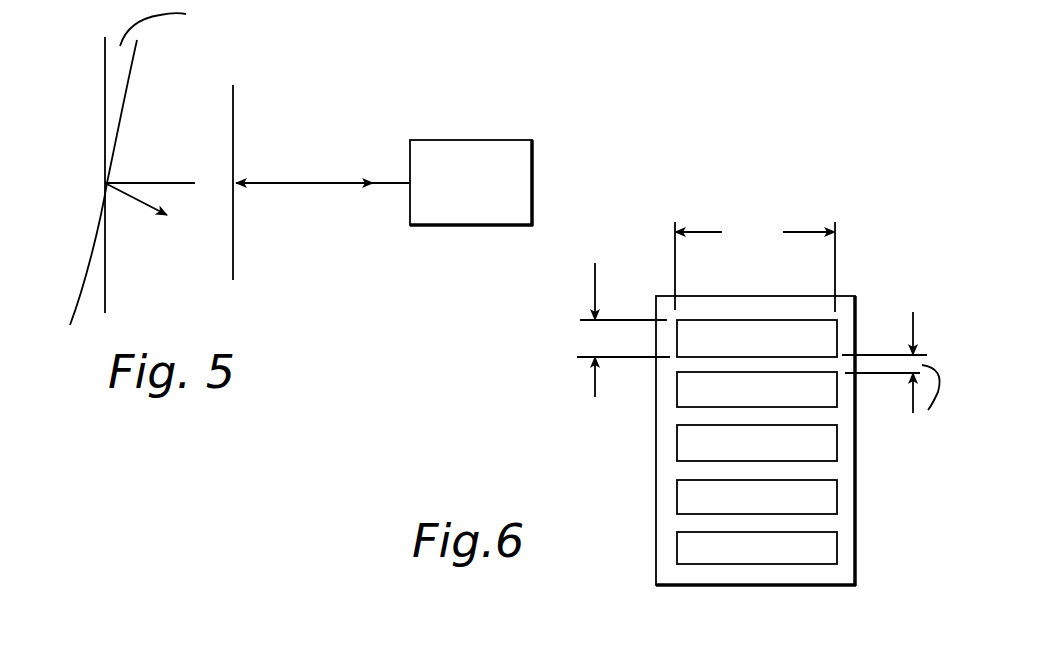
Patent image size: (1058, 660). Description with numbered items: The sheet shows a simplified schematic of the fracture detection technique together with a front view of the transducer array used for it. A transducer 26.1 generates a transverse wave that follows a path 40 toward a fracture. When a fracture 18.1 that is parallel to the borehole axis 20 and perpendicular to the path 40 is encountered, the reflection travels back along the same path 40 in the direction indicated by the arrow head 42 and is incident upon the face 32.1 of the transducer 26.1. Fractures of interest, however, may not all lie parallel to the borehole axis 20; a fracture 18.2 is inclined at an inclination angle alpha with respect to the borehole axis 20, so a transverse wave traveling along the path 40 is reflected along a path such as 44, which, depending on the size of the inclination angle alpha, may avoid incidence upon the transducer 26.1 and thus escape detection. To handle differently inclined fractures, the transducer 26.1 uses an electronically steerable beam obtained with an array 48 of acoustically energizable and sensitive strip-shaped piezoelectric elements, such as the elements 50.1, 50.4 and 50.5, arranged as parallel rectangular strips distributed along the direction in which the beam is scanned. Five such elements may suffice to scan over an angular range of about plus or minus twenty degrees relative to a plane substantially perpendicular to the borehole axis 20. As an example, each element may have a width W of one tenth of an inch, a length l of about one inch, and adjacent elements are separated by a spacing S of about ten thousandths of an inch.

In FIG. 5, the borehole axis 20 is at (105, 72).
In FIG. 5, the inclined fracture 18.2 is at (121, 92).
In FIG. 5, the inclination angle alpha is at (161, 24).
In FIG. 5, the path 40 is at (165, 182).
In FIG. 5, the reflection path 44 is at (142, 207).
In FIG. 5, the fracture parallel to borehole axis 18.1 is at (233, 123).
In FIG. 5, the arrow head 42 is at (355, 178).
In FIG. 5, the face of transducer 32.1 is at (406, 155).
In FIG. 5, the transducer 26.1 is at (495, 227).
In FIG. 6, the transducer 26.1 is at (663, 555).
In FIG. 6, the array 48 is at (675, 419).
In FIG. 6, the strip-shaped element 50.1 is at (840, 330).
In FIG. 6, the strip-shaped element 50.4 is at (838, 497).
In FIG. 6, the strip-shaped element 50.5 is at (838, 548).
In FIG. 6, the length l is at (755, 267).
In FIG. 6, the width W is at (623, 330).
In FIG. 6, the spacing S is at (891, 374).